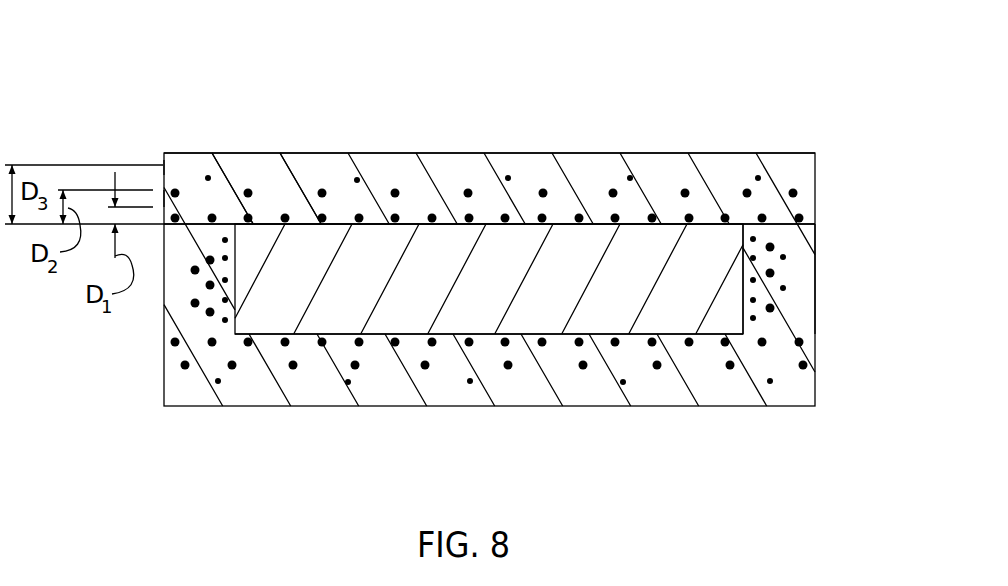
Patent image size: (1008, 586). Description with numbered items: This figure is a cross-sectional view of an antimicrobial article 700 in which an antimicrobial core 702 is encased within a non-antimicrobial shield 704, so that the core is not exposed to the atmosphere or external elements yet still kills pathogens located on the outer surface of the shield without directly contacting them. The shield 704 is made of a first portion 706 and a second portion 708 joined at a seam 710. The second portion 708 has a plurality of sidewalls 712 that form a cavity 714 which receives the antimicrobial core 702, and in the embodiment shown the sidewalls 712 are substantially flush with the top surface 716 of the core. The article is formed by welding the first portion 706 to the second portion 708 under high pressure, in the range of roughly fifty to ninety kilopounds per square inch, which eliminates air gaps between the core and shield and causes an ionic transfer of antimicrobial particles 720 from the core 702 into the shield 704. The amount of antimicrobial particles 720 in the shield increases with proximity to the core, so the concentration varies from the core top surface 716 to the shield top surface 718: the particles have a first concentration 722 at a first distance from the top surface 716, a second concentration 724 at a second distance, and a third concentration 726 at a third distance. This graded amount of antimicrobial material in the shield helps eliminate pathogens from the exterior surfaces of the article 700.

The antimicrobial article 700 is at (162, 75).
The antimicrobial core 702 is at (677, 320).
The non-antimicrobial shield 704 is at (130, 400).
The first portion 706 is at (253, 392).
The second portion 708 is at (590, 167).
The seam 710 is at (792, 226).
The sidewalls 712 is at (797, 313).
The cavity 714 is at (565, 336).
The top surface 716 is at (247, 225).
The shield top surface 718 is at (745, 153).
The antimicrobial particles 720 is at (285, 197).
The first concentration 722 is at (815, 218).
The second concentration 724 is at (808, 193).
The third concentration 726 is at (808, 169).